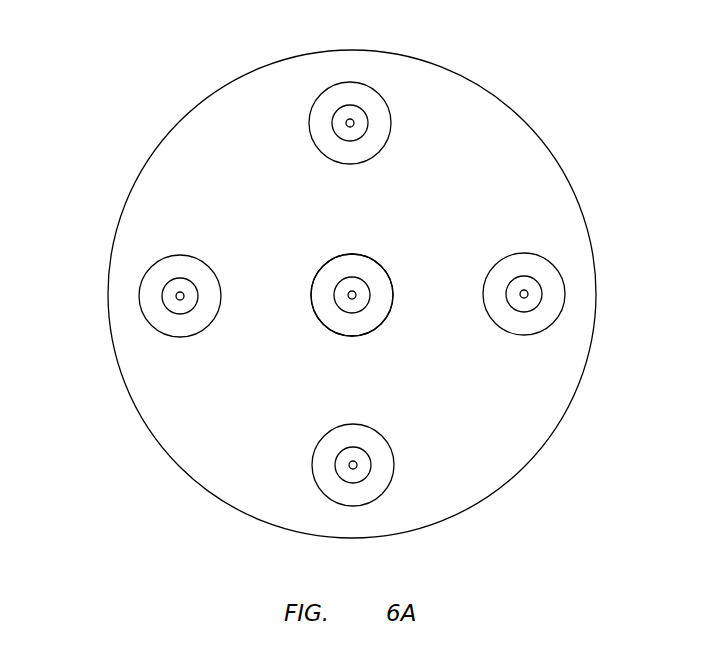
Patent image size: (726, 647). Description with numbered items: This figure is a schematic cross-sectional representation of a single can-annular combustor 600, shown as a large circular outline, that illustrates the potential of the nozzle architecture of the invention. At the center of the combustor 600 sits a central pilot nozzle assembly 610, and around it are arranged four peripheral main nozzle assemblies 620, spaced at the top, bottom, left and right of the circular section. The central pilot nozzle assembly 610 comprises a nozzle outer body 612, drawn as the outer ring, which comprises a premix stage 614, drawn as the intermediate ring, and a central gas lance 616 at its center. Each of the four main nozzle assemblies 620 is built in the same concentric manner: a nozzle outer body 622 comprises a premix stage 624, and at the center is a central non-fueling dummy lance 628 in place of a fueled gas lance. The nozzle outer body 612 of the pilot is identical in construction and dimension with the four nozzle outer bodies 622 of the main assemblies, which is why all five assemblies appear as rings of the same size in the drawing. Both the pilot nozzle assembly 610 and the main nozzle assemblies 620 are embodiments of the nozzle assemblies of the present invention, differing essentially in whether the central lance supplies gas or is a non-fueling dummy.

The can-annular combustor 600 is at (133, 418).
The central pilot nozzle assembly 610 is at (340, 286).
The nozzle outer body 612 is at (360, 253).
The premix stage 614 is at (337, 317).
The central gas lance 616 is at (356, 300).
The peripheral main nozzle assemblies 620 is at (352, 292).
The nozzle outer body 622 is at (379, 94).
The premix stage 624 is at (336, 109).
The central non-fueling dummy lance 628 is at (350, 119).